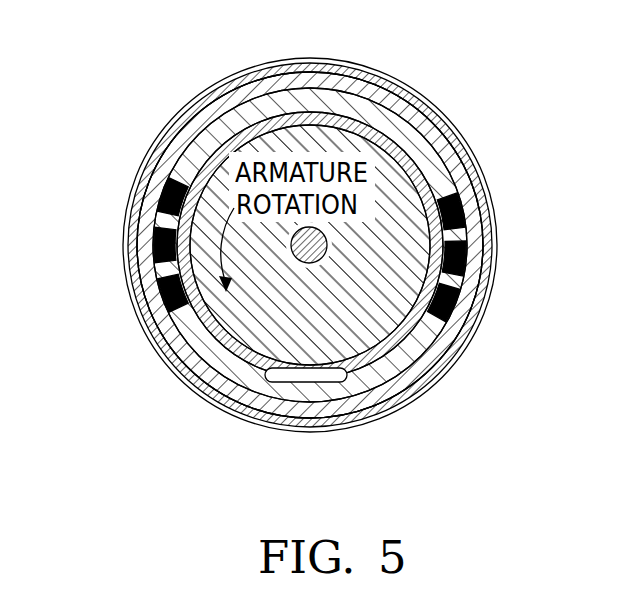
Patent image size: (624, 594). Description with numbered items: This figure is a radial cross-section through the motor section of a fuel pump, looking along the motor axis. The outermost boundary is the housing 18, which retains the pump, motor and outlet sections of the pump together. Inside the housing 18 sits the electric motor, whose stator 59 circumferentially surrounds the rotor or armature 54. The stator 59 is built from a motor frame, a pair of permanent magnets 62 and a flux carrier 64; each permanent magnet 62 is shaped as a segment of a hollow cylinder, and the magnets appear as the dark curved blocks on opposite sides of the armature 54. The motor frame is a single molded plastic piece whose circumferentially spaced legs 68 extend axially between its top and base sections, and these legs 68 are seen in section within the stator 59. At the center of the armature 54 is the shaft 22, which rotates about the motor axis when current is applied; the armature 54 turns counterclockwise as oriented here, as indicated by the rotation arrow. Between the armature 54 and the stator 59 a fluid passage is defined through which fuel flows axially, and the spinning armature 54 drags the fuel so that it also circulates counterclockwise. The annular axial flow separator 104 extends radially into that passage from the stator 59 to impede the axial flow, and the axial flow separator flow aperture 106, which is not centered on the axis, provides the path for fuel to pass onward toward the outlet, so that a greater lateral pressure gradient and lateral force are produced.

The housing 18 is at (417, 403).
The shaft 22 is at (322, 257).
The armature 54 is at (367, 130).
The stator 59 is at (452, 120).
The permanent magnets 62 is at (257, 108).
The flux carrier 64 is at (170, 363).
The legs 68 is at (455, 205).
The axial flow separator 104 is at (440, 373).
The axial flow separator flow aperture 106 is at (335, 382).